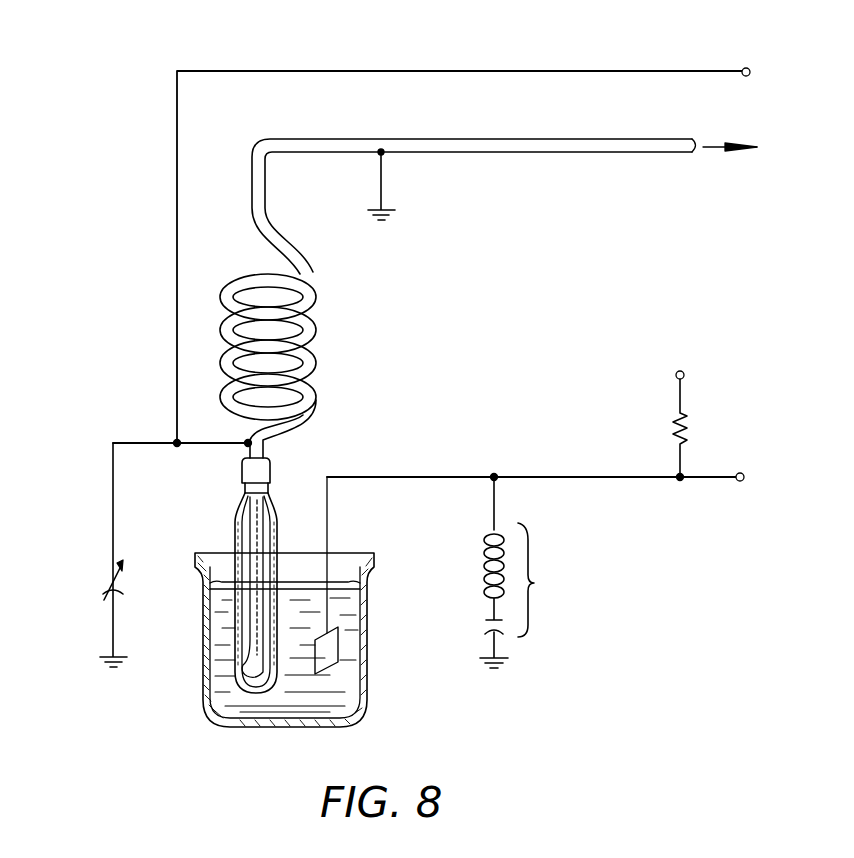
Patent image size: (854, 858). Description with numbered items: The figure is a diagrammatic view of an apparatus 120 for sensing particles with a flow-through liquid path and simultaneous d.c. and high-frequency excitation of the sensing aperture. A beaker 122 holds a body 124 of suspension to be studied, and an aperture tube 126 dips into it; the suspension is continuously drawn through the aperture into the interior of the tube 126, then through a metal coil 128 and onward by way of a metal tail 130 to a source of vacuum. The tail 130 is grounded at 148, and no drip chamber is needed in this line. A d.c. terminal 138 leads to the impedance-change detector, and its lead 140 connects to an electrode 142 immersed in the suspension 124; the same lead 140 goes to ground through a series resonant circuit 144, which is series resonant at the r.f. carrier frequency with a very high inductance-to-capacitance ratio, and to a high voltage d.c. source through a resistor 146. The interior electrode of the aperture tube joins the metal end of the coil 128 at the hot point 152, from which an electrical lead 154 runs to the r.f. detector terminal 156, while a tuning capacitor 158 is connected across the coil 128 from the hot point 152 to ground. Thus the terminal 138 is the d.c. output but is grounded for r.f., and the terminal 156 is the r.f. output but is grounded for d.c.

The apparatus 120 is at (333, 617).
The beaker 122 is at (203, 704).
The body of suspension 124 is at (328, 705).
The aperture tube 126 is at (236, 530).
The coil 128 is at (316, 373).
The tail 130 is at (382, 138).
The d.c. terminal 138 is at (745, 472).
The lead 140 is at (458, 476).
The electrode 142 is at (378, 575).
The series resonant circuit 144 is at (536, 583).
The resistor 146 is at (672, 421).
The ground 148 is at (382, 182).
The hot point 152 is at (246, 446).
The electrical lead 154 is at (177, 219).
The r.f. terminal 156 is at (750, 67).
The tuning capacitor 158 is at (110, 585).